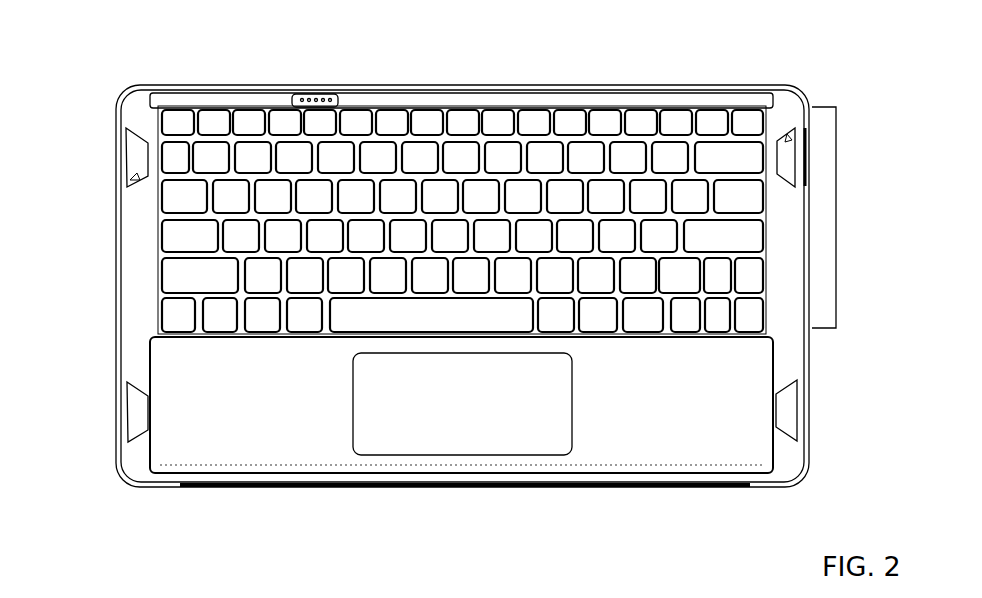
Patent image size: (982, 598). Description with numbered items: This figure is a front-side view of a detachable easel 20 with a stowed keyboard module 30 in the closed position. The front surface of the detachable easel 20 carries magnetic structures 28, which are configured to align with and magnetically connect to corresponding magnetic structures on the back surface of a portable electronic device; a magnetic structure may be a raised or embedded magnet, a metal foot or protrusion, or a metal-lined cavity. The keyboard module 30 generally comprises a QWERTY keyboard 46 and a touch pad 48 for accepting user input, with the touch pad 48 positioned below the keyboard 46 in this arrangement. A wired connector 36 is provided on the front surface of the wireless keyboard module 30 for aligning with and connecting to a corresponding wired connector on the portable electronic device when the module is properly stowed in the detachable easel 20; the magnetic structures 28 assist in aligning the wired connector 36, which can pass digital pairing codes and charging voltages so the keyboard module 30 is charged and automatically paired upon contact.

The detachable easel 20 is at (137, 92).
The magnetic structures 28 is at (128, 183).
The keyboard module 30 is at (599, 81).
The wired connector 36 is at (318, 96).
The QWERTY keyboard 46 is at (838, 216).
The touch pad 48 is at (455, 418).